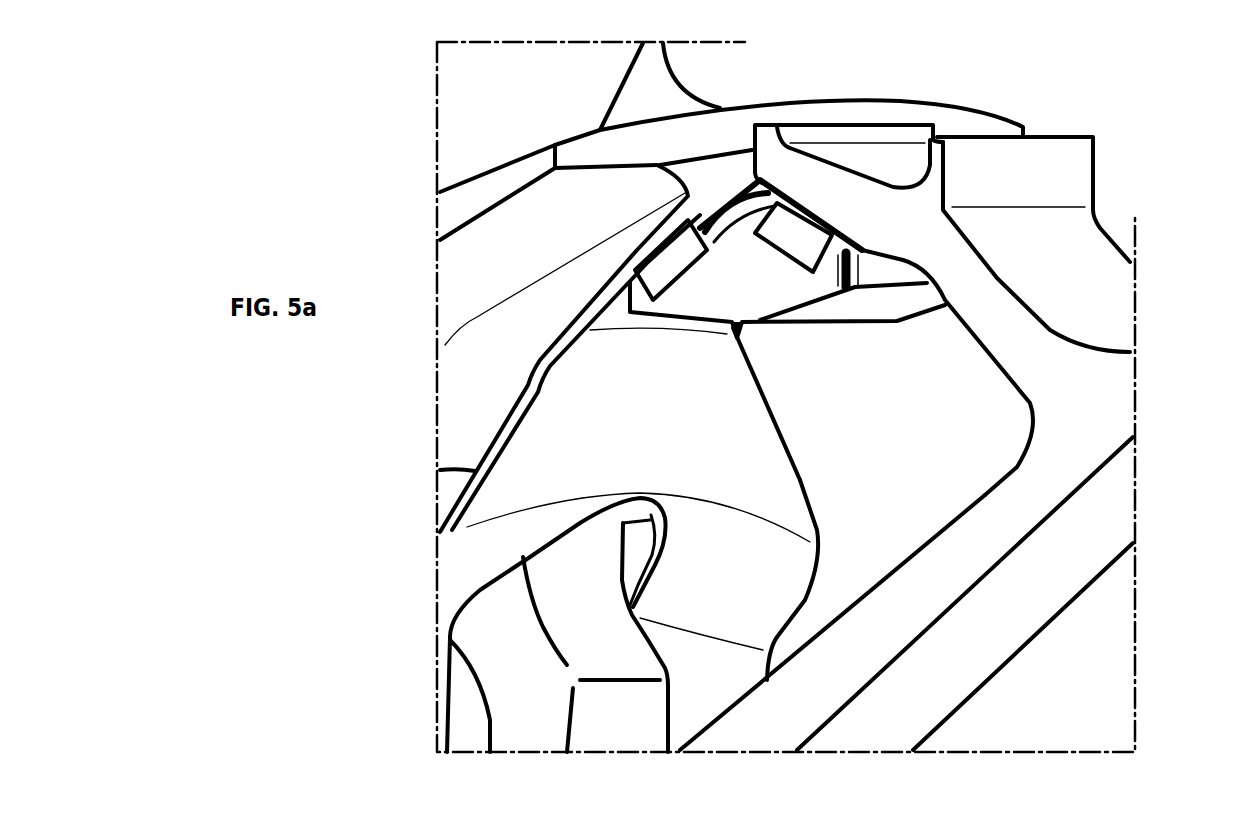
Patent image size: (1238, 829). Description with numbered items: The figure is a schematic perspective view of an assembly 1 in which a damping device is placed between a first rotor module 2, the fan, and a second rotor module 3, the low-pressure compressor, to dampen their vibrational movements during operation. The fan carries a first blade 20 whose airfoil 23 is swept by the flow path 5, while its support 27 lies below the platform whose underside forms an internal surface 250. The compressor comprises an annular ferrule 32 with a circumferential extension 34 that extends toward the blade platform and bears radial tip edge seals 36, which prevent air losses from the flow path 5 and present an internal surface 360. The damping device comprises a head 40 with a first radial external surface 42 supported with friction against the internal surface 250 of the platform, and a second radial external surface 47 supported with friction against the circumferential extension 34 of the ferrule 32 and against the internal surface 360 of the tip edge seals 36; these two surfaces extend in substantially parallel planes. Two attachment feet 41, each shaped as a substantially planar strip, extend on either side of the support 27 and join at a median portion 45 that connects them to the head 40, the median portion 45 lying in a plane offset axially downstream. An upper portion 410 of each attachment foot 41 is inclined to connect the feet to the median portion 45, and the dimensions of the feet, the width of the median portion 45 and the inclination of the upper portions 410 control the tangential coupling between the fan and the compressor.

The assembly 1 is at (1058, 80).
The first rotor module 2 is at (378, 355).
The second rotor module 3 is at (1173, 375).
The flow path 5 is at (846, 80).
The first blade 20 is at (410, 127).
The airfoil 23 is at (530, 101).
The support 27 is at (623, 732).
The annular ferrule 32 is at (912, 593).
The circumferential extension 34 is at (983, 315).
The tip edge seals 36 is at (1057, 173).
The head 40 is at (747, 286).
The attachment feet 41 is at (712, 691).
The first radial external surface 42 is at (730, 187).
The median portion 45 is at (660, 427).
The second radial external surface 47 is at (815, 213).
The internal surface 250 is at (610, 216).
The internal surface 360 is at (865, 270).
The upper portion 410 is at (507, 556).